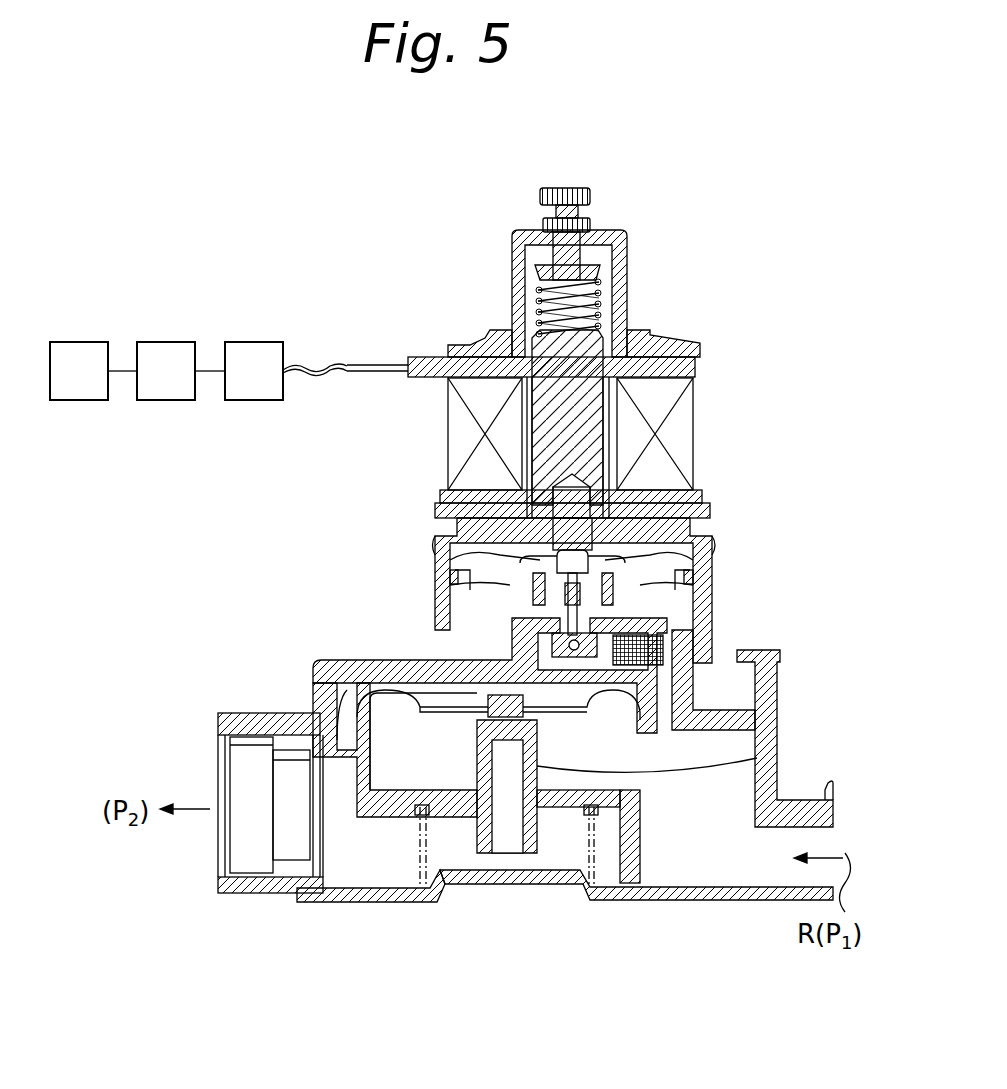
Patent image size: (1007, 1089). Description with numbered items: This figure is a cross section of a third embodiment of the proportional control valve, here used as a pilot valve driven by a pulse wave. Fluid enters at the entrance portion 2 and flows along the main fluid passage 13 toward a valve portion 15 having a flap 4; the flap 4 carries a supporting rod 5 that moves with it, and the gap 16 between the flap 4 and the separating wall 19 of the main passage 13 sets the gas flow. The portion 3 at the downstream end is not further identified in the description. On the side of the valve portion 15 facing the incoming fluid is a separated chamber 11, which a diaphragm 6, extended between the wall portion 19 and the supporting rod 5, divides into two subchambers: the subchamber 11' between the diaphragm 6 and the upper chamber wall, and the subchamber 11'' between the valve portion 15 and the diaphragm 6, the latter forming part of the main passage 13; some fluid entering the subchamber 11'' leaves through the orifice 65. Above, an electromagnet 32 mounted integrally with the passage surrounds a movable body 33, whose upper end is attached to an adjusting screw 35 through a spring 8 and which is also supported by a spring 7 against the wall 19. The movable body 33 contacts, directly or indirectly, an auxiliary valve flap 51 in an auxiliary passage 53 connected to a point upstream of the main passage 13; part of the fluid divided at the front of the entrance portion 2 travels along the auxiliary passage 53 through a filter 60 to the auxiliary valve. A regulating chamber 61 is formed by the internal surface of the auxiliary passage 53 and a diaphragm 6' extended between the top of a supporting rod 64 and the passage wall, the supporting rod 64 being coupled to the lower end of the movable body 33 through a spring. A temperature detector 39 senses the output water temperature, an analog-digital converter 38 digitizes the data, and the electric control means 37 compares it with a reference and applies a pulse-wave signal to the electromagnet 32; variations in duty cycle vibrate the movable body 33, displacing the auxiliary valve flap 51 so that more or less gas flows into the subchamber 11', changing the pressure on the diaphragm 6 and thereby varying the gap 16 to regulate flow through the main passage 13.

The adjusting screw 35 is at (588, 196).
The spring 8 is at (603, 287).
The movable body 33 is at (585, 355).
The electromagnet 32 is at (478, 398).
The electric control means 37 is at (316, 371).
The analog-digital converter 38 is at (181, 371).
The temperature detector 39 is at (93, 371).
The diaphragm 6' is at (615, 470).
The supporting rod 64 is at (707, 540).
The filter 60 is at (712, 567).
The regulating chamber 61 is at (516, 578).
The auxiliary valve flap 51 is at (525, 600).
The auxiliary passage 53 is at (497, 652).
The diaphragm 6 is at (395, 705).
The subchamber 11' is at (373, 679).
The orifice 65 is at (320, 715).
The outlet port 3 is at (220, 863).
The valve portion 15 is at (452, 775).
The gap 16 is at (383, 773).
The separated chamber 11 is at (581, 720).
The supporting rod 5 is at (760, 757).
The spring 7 is at (415, 855).
The flap 4 is at (608, 815).
The main fluid passage 13 is at (678, 870).
The subchamber 11'' is at (371, 933).
The wall portion 19 is at (643, 832).
The entrance portion 2 is at (833, 833).